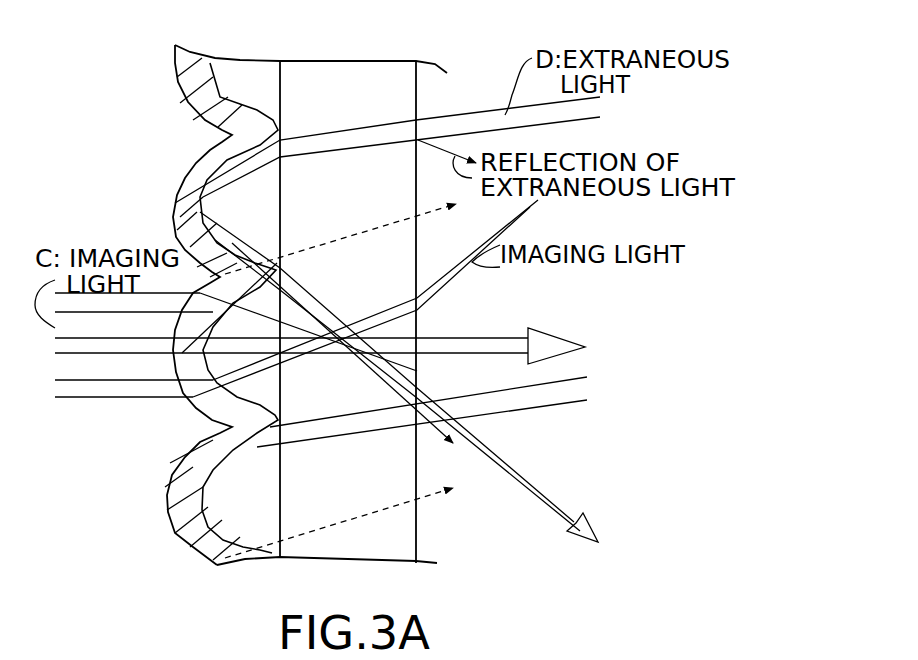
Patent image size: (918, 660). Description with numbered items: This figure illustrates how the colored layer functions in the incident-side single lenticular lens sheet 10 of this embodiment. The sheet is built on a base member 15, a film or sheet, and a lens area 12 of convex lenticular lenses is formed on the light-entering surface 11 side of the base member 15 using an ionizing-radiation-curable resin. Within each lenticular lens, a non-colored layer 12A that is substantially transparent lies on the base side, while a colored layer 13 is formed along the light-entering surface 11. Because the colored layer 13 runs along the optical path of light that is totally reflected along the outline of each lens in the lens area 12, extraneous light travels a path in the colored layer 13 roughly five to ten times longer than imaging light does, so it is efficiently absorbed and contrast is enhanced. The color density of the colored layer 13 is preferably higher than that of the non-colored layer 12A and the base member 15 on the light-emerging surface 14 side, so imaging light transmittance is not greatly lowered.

The lenticular lens sheet 10 is at (456, 62).
The light-entering surface 11 is at (187, 451).
The lens area 12 is at (164, 323).
The non-colored layer 12A is at (178, 500).
The colored layer 13 is at (193, 537).
The light-emerging surface 14 is at (420, 542).
The base member 15 is at (407, 97).